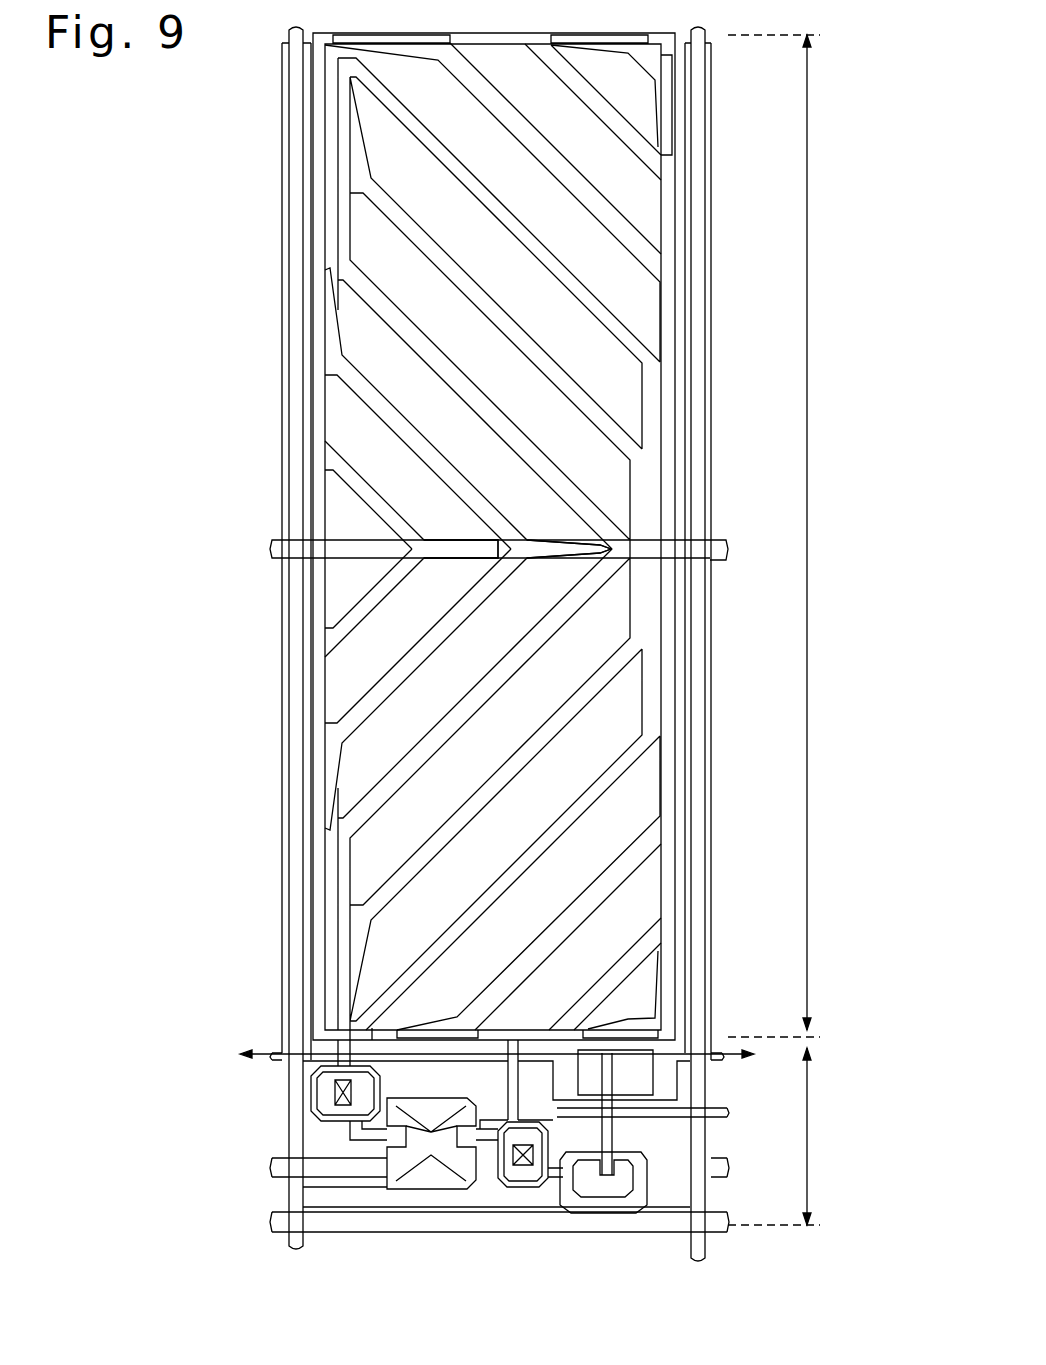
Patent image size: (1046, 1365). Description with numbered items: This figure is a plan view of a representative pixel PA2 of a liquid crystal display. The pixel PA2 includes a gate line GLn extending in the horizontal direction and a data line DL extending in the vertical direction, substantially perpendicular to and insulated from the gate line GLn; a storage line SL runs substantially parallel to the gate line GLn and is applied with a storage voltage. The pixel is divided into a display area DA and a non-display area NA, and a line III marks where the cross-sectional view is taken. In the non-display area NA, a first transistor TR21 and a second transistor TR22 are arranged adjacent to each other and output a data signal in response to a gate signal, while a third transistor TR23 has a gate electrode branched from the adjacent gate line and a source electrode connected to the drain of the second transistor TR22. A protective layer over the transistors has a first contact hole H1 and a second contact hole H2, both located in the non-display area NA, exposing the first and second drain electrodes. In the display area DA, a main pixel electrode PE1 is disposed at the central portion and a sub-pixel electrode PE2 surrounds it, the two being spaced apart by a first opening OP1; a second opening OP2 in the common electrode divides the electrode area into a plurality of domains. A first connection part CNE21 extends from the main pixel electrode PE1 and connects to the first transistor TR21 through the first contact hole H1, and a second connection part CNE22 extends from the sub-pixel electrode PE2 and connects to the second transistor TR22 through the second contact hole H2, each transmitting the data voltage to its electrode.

The pixel PA2 is at (215, 107).
The storage line SL is at (281, 1050).
The data line DL is at (293, 1244).
The main pixel electrode PE1 is at (615, 705).
The sub-pixel electrode PE2 is at (628, 795).
The first opening OP1 is at (625, 748).
The second opening OP2 is at (615, 660).
The display area DA is at (785, 536).
The non-display area NA is at (785, 1136).
The line III-III' III is at (498, 1053).
The gate line GLn is at (272, 1168).
The second connection part CNE22 is at (341, 1057).
The first contact hole H1 is at (337, 1089).
The first transistor TR21 is at (399, 1168).
The second transistor TR22 is at (460, 1170).
The third transistor TR23 is at (605, 1205).
The second contact hole H2 is at (519, 1167).
The first connection part CNE21 is at (506, 1091).